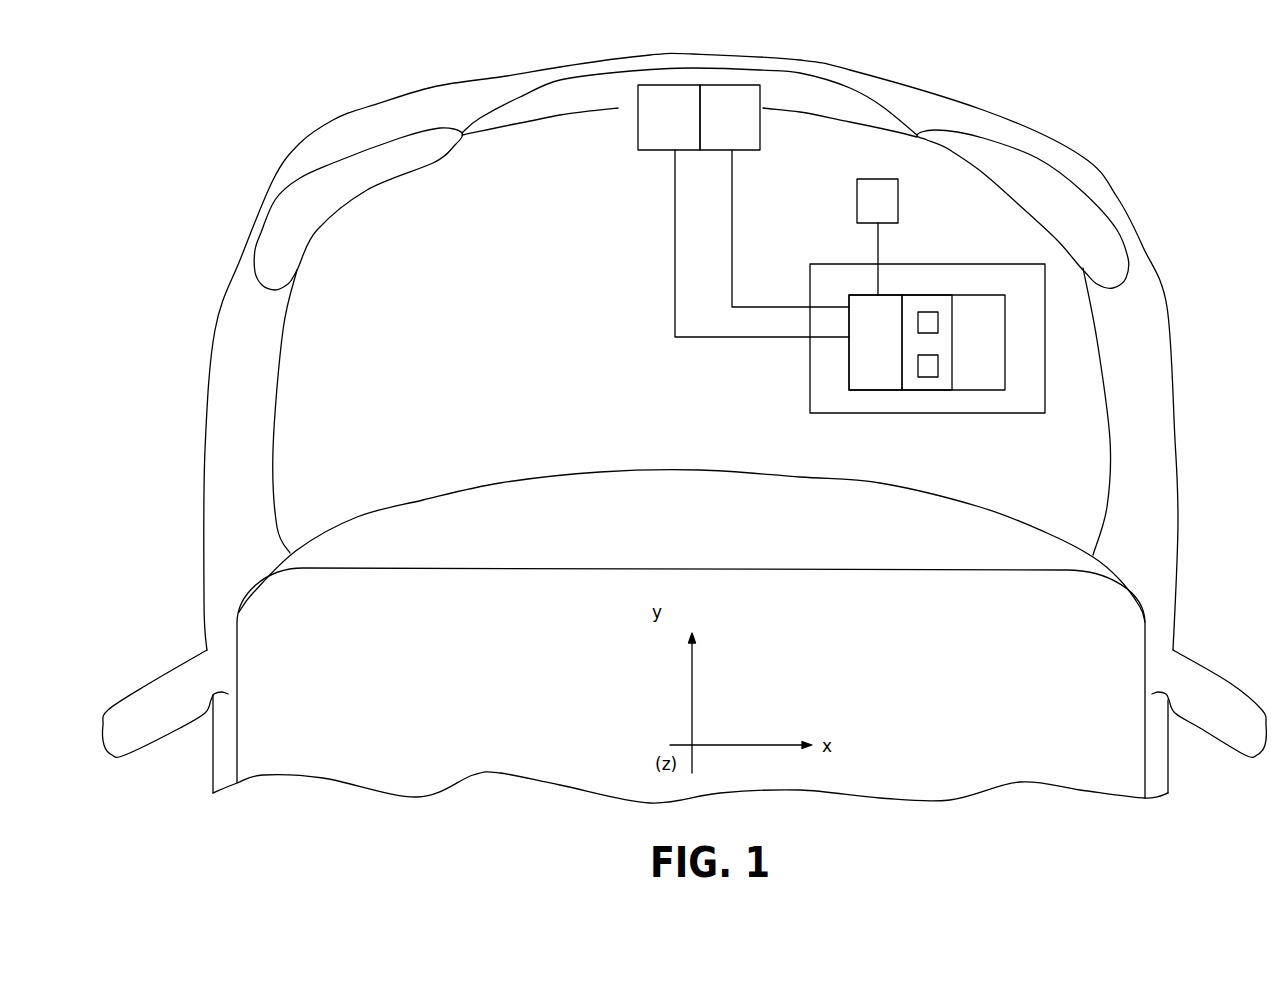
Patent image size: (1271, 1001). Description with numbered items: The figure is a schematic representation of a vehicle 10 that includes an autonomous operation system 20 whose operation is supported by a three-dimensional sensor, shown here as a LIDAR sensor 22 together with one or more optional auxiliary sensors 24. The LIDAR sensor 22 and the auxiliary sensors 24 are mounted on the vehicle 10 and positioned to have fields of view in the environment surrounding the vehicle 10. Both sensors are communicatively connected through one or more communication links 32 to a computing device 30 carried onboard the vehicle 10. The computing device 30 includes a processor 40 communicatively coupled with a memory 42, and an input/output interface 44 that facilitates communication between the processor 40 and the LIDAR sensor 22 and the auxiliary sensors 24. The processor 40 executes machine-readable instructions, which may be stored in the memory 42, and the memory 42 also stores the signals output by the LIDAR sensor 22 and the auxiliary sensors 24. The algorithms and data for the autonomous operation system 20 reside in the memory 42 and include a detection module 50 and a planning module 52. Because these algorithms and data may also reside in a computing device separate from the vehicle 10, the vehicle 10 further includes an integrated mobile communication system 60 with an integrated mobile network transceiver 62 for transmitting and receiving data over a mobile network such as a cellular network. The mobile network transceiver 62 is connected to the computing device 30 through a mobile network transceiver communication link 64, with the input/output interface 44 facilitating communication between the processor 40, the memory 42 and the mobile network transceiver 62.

The vehicle 10 is at (243, 128).
The autonomous operation system 20 is at (1026, 243).
The LIDAR sensor 22 is at (648, 152).
The auxiliary sensors 24 is at (752, 152).
The computing device 30 is at (1045, 275).
The communication links 32 is at (675, 272).
The processor 40 is at (982, 390).
The memory 42 is at (927, 390).
The input/output interface 44 is at (870, 390).
The detection module 50 is at (938, 322).
The planning module 52 is at (938, 366).
The mobile communication system 60 is at (1012, 316).
The mobile network transceiver 62 is at (898, 190).
The mobile network transceiver communication link 64 is at (878, 240).